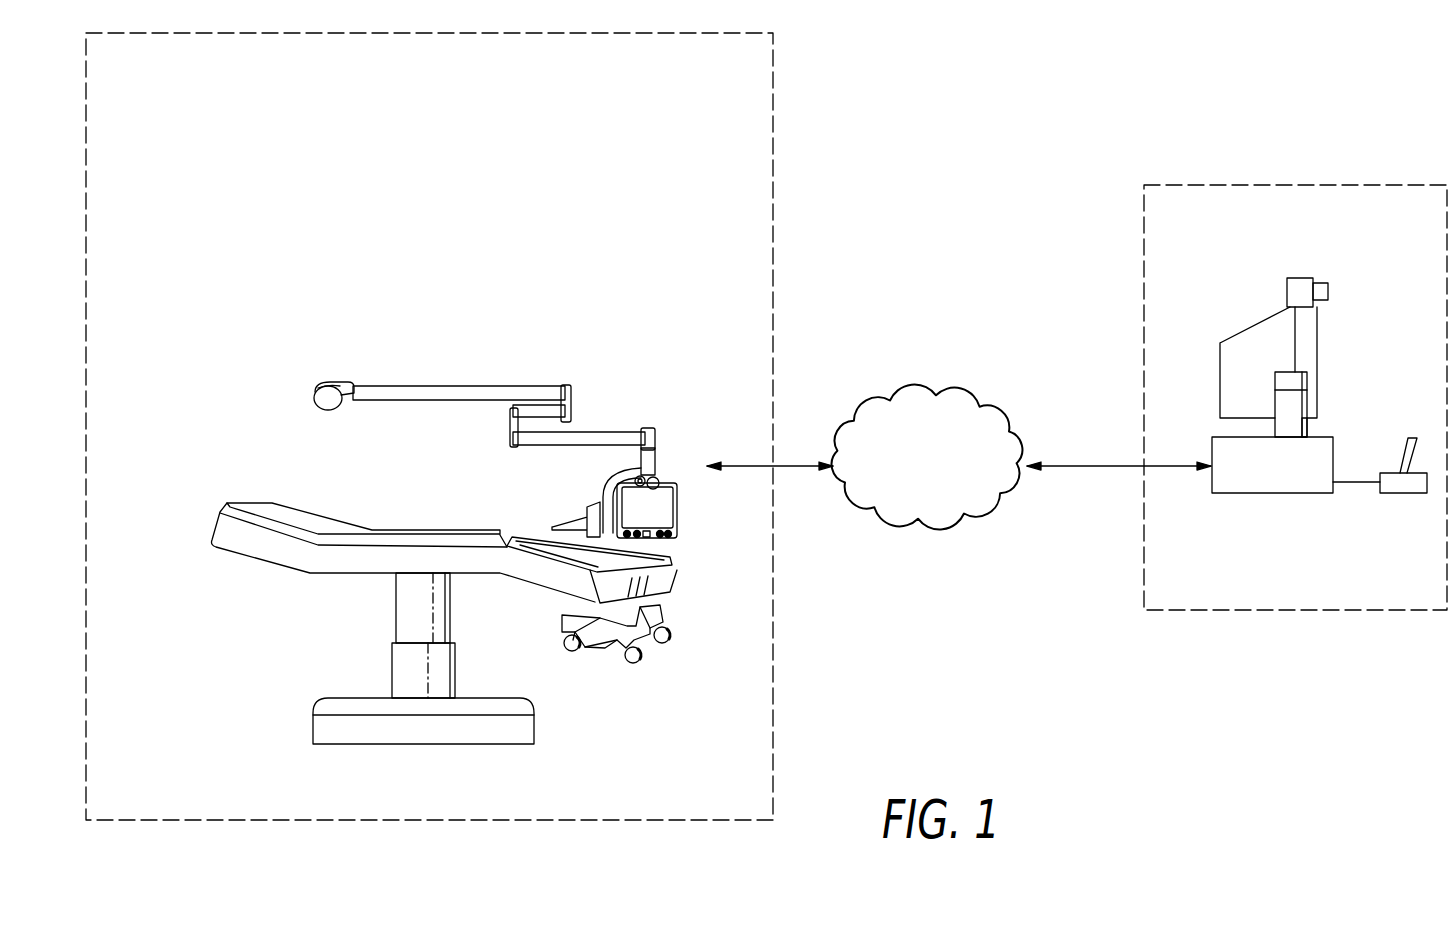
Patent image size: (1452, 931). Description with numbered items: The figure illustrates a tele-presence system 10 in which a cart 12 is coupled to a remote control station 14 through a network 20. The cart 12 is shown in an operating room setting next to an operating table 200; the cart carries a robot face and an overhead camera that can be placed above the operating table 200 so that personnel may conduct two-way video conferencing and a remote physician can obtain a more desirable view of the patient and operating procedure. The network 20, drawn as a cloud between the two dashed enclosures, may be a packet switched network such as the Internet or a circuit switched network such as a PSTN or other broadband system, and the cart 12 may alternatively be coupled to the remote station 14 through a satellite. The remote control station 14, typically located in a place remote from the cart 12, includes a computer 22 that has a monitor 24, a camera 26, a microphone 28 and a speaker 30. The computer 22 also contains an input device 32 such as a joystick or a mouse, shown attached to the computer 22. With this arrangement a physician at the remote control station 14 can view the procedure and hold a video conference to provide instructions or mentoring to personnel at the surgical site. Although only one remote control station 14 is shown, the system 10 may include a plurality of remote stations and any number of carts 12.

The tele-presence system 10 is at (766, 426).
The cart 12 is at (622, 357).
The operating table 200 is at (482, 535).
The network 20 is at (927, 457).
The remote control station 14 is at (1233, 367).
The computer 22 is at (1303, 487).
The monitor 24 is at (1307, 337).
The camera 26 is at (1293, 288).
The microphone 28 is at (1285, 377).
The speaker 30 is at (1297, 428).
The input device 32 is at (1403, 493).